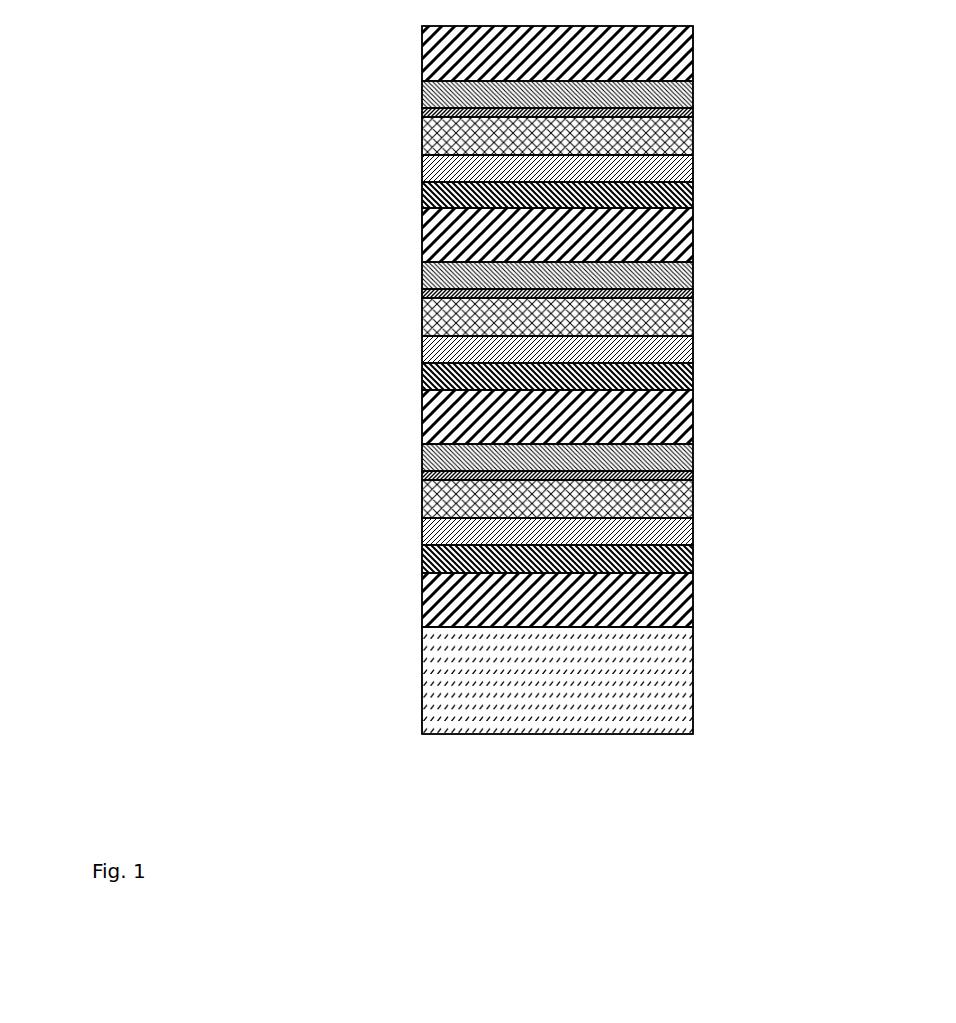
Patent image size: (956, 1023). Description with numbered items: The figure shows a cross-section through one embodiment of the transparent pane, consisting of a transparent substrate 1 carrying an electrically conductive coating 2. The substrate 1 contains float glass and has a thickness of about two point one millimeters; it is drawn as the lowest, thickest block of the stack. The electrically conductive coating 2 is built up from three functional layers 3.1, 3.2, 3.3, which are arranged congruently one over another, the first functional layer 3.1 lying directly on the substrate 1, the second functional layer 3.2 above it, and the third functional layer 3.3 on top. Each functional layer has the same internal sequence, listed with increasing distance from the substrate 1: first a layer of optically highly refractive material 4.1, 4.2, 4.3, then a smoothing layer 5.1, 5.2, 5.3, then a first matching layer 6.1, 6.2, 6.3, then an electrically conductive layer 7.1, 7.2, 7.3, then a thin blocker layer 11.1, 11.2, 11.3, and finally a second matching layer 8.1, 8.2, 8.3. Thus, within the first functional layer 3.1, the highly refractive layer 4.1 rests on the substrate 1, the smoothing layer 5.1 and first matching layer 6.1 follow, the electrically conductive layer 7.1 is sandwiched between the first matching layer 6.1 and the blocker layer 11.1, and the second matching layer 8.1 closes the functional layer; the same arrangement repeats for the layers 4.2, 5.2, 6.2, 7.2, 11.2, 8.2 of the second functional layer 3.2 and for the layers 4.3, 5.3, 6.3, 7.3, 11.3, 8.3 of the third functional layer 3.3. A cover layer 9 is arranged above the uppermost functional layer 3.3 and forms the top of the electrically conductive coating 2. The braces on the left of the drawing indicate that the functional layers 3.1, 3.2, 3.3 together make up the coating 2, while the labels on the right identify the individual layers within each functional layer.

The transparent substrate 1 is at (593, 708).
The electrically conductive coating 2 is at (398, 26).
The first functional layer 3.1 is at (280, 442).
The second functional layer 3.2 is at (400, 442).
The third functional layer 3.3 is at (400, 81).
The layer of optically highly refractive material 4.1 is at (645, 602).
The layer of optically highly refractive material 4.2 is at (645, 422).
The layer of optically highly refractive material 4.3 is at (645, 238).
The smoothing layer 5.1 is at (645, 562).
The smoothing layer 5.2 is at (645, 377).
The smoothing layer 5.3 is at (645, 197).
The first matching layer 6.1 is at (645, 533).
The first matching layer 6.2 is at (645, 348).
The first matching layer 6.3 is at (645, 167).
The electrically conductive layer 7.1 is at (645, 502).
The electrically conductive layer 7.2 is at (645, 318).
The electrically conductive layer 7.3 is at (645, 137).
The second matching layer 8.1 is at (645, 457).
The second matching layer 8.2 is at (645, 275).
The second matching layer 8.3 is at (645, 93).
The cover layer 9 is at (645, 52).
The blocker layer 11.1 is at (422, 475).
The blocker layer 11.2 is at (422, 293).
The blocker layer 11.3 is at (422, 112).